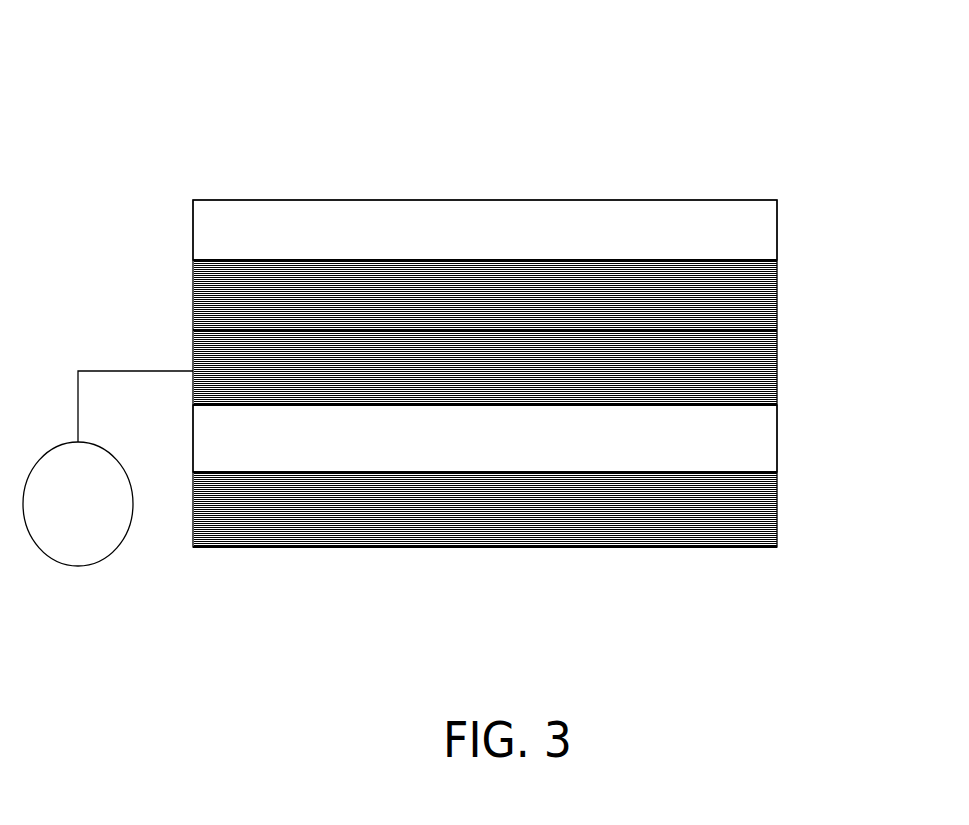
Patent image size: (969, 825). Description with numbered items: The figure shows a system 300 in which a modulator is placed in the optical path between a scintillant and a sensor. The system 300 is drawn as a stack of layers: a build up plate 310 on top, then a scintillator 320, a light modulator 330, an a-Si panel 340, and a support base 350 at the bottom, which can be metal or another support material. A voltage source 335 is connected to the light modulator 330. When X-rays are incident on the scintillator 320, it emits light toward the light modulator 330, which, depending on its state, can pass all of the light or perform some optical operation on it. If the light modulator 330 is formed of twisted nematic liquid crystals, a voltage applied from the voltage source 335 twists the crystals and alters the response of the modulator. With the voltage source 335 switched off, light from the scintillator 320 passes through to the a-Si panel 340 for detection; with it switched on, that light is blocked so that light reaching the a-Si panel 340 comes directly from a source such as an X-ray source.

The system 300 is at (235, 113).
The build up plate 310 is at (608, 200).
The scintillator 320 is at (755, 297).
The light modulator 330 is at (762, 382).
The voltage source 335 is at (82, 543).
The a-Si panel 340 is at (762, 443).
The support base 350 is at (315, 535).